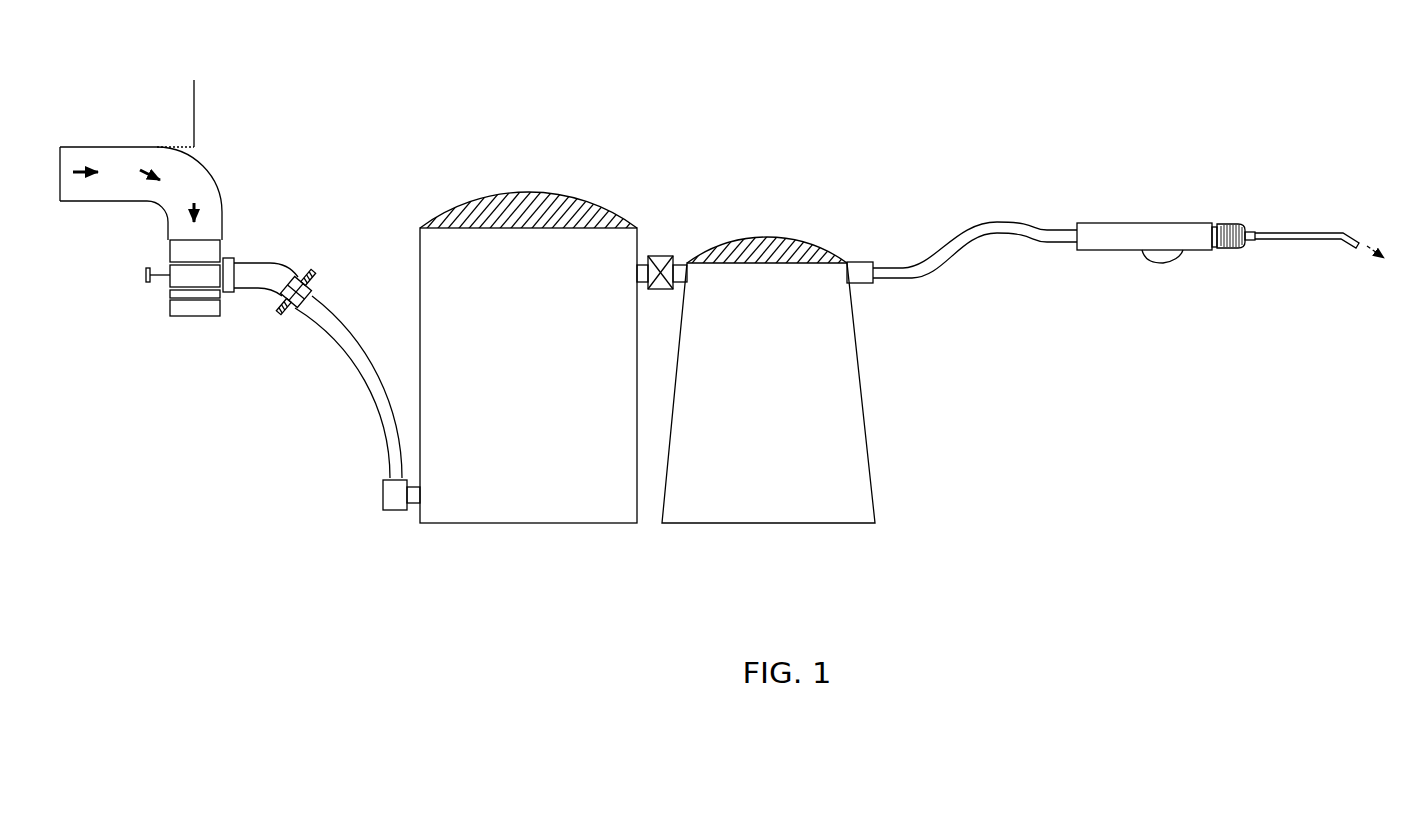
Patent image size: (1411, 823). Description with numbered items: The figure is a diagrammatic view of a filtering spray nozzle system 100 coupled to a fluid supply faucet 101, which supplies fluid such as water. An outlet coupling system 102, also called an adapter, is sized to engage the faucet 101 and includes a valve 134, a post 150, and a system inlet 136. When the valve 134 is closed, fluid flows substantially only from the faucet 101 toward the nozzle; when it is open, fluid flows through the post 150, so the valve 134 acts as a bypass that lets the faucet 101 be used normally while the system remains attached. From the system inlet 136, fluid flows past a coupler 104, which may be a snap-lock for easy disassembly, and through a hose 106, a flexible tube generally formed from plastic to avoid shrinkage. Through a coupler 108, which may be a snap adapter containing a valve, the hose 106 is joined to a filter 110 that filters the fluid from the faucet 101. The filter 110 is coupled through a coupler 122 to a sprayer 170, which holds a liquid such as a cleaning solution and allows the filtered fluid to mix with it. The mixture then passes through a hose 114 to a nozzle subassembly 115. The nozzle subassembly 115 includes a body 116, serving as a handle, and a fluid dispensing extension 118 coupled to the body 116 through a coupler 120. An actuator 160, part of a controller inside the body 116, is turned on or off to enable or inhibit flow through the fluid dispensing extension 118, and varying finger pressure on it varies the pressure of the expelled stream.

The spray nozzle system 100 is at (882, 153).
The faucet 101 is at (193, 168).
The outlet coupling system 102 is at (152, 315).
The coupler 104 is at (313, 267).
The hose 106 is at (347, 355).
The coupler 108 is at (395, 505).
The filter 110 is at (570, 184).
The hose 114 is at (997, 222).
The nozzle subassembly 115 is at (1254, 182).
The body 116 is at (1117, 233).
The fluid dispensing extension 118 is at (1323, 230).
The coupler 120 is at (1230, 250).
The coupler 122 is at (657, 255).
The valve 134 is at (167, 268).
The system inlet 136 is at (256, 264).
The post 150 is at (183, 317).
The actuator 160 is at (1145, 257).
The sprayer 170 is at (836, 548).